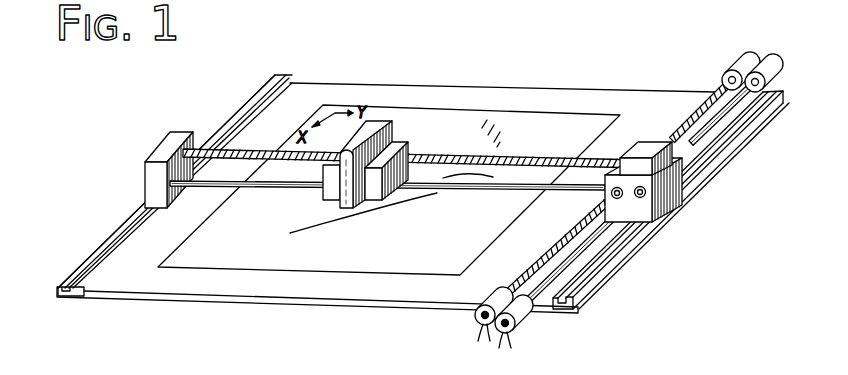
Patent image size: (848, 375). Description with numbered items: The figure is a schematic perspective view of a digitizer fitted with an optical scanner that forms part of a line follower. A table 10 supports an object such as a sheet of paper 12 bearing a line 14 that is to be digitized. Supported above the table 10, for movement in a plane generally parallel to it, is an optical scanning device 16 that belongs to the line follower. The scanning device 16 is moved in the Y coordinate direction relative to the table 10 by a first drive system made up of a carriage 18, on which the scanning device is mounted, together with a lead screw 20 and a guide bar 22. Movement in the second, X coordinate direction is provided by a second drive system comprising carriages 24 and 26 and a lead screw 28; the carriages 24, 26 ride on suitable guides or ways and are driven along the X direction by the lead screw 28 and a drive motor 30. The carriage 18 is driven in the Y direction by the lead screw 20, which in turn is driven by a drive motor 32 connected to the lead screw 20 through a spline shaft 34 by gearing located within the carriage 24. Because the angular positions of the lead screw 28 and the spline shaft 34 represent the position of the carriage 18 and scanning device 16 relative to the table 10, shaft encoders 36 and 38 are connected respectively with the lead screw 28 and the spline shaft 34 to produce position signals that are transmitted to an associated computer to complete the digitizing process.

The table 10 is at (510, 87).
The sheet of paper 12 is at (162, 260).
The line 14 is at (262, 218).
The optical scanning device 16 is at (395, 123).
The carriage 18 is at (367, 196).
The lead screw 20 is at (522, 152).
The guide bar 22 is at (503, 192).
The carriage 24 is at (670, 203).
The carriage 26 is at (152, 173).
The lead screw 28 is at (555, 242).
The drive motor 30 is at (722, 70).
The drive motor 32 is at (781, 72).
The spline shaft 34 is at (703, 140).
The shaft encoder 36 is at (473, 315).
The shaft encoder 38 is at (523, 327).